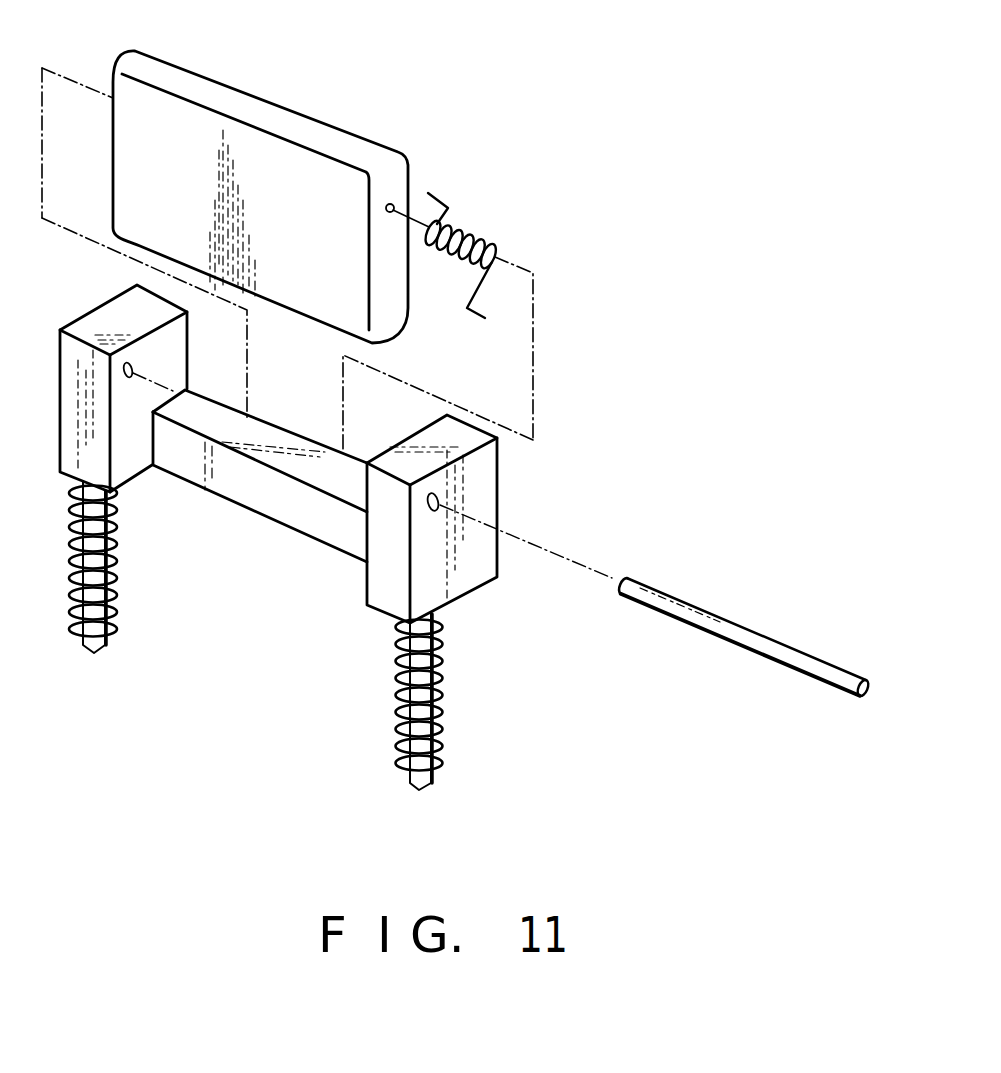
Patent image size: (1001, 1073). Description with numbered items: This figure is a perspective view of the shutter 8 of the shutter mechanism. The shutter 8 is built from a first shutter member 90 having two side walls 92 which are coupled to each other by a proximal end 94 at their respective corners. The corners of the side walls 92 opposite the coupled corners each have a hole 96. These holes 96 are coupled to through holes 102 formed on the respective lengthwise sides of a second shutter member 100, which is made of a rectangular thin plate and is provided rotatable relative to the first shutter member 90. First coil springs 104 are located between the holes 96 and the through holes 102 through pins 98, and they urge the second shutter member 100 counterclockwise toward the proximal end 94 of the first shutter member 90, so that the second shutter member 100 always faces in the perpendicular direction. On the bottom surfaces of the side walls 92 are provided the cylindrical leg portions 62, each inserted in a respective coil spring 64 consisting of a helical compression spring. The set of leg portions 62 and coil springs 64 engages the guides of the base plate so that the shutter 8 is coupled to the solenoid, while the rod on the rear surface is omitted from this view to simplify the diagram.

The shutter 8 is at (40, 88).
The leg portion 62 is at (95, 580).
The coil spring 64 is at (72, 612).
The first shutter member 90 is at (296, 482).
The side wall 92 is at (60, 410).
The proximal end 94 is at (255, 503).
The hole 96 is at (123, 363).
The pin 98 is at (771, 648).
The second shutter member 100 is at (227, 86).
The through hole 102 is at (394, 204).
The first coil spring 104 is at (482, 240).